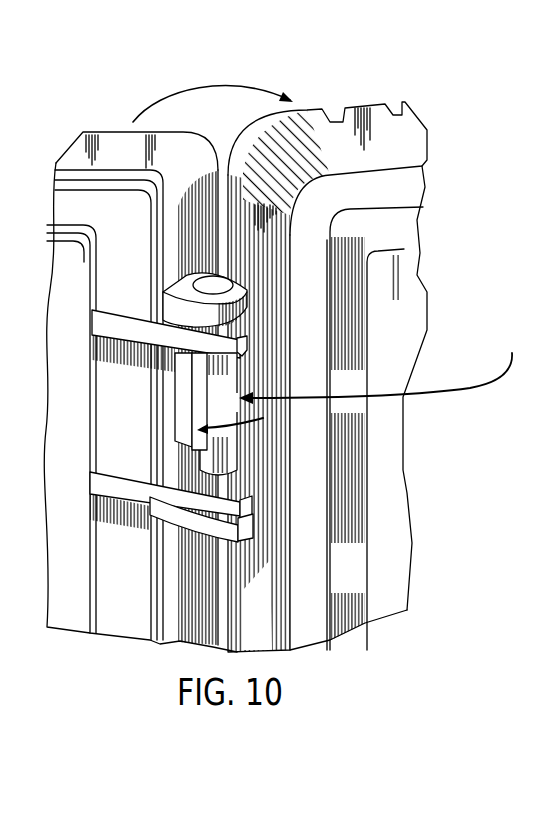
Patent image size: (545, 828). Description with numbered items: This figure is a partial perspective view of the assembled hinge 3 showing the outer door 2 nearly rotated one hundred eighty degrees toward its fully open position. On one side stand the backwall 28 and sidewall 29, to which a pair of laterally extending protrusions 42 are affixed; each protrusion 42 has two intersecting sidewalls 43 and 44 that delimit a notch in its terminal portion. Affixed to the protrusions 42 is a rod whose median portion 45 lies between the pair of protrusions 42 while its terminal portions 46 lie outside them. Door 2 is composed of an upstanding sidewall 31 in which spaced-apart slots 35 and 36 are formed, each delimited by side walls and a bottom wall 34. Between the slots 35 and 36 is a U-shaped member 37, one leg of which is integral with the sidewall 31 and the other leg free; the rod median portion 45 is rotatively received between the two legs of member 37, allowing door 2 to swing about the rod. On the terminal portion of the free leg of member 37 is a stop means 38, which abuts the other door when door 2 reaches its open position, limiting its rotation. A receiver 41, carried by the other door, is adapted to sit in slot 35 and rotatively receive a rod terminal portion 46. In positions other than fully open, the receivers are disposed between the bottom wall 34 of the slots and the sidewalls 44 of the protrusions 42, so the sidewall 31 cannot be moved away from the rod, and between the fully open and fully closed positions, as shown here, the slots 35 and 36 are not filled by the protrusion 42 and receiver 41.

The door 2 is at (398, 355).
The hinge 3 is at (375, 368).
The backwall 28 is at (78, 317).
The sidewall 29 is at (136, 169).
The upstanding sidewall 31 is at (351, 156).
The bottom wall 34 is at (252, 488).
The slot 35 is at (247, 350).
The slot 36 is at (240, 468).
The U-shaped member 37 is at (175, 418).
The stop means 38 is at (197, 385).
The receiver 41 is at (250, 320).
The protrusion 42 is at (126, 311).
The sidewall 43 is at (252, 528).
The sidewall 44 is at (254, 505).
The rod median portion 45 is at (238, 413).
The rod terminal portion 46 is at (231, 280).